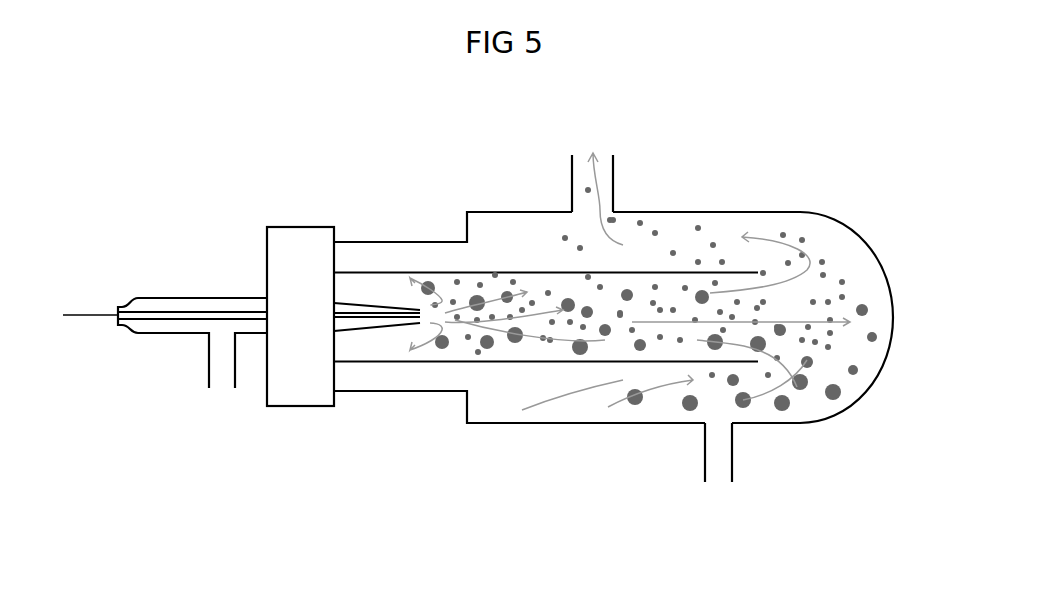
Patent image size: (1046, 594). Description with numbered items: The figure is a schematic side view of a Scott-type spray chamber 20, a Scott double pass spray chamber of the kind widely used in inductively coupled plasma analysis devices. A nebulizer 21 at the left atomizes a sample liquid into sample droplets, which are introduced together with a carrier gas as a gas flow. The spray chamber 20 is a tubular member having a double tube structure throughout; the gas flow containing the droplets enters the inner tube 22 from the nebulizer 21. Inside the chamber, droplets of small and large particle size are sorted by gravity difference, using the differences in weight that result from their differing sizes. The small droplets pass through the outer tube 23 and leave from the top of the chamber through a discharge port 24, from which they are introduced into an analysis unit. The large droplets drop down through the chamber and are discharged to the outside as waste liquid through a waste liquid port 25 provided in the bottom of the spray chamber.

The Scott-type spray chamber 20 is at (229, 563).
The nebulizer 21 is at (367, 298).
The inner tube 22 is at (662, 273).
The outer tube 23 is at (772, 423).
The discharge port 24 is at (572, 177).
The waste liquid port 25 is at (702, 457).